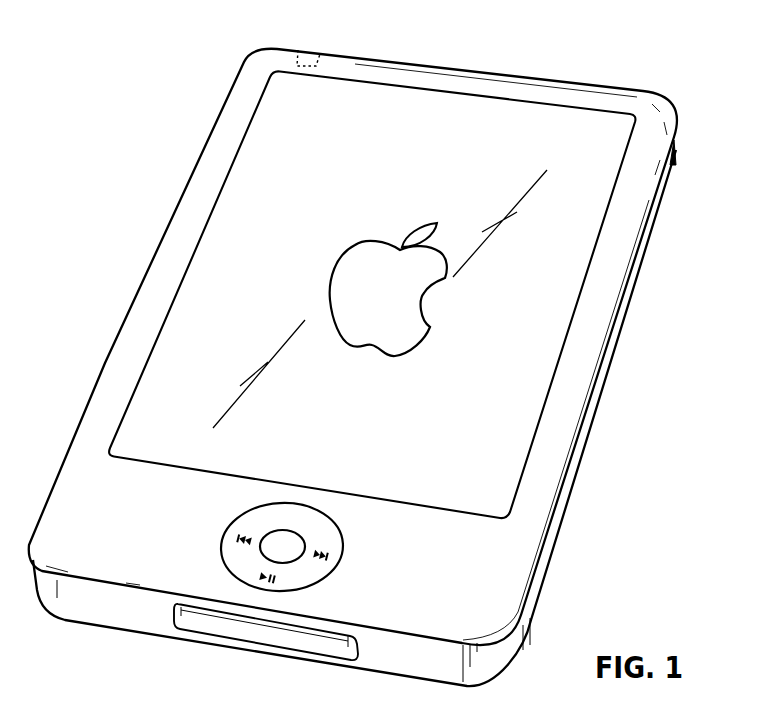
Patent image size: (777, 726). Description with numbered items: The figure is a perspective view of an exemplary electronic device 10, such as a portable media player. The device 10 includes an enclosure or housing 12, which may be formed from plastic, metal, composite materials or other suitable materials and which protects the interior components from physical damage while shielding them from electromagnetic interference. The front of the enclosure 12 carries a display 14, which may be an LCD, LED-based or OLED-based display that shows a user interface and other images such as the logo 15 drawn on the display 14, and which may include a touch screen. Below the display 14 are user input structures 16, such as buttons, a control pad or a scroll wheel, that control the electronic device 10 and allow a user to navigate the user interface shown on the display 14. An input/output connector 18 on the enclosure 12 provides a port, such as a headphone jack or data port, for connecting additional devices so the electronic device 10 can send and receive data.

The electronic device 10 is at (150, 70).
The enclosure 12 is at (673, 152).
The display 14 is at (540, 112).
The logo 15 is at (337, 262).
The user input structures 16 is at (222, 551).
The input/output connectors 18 is at (263, 633).